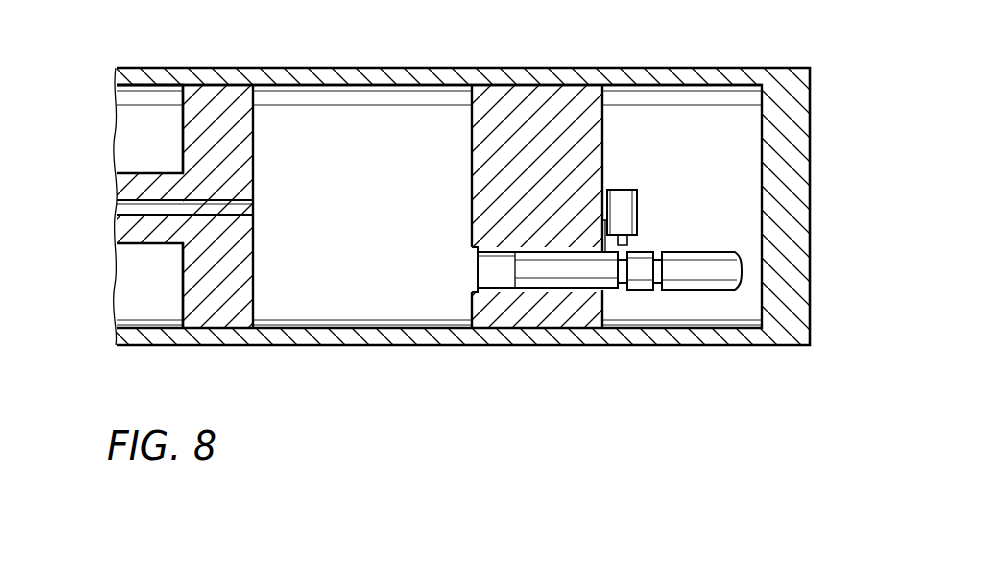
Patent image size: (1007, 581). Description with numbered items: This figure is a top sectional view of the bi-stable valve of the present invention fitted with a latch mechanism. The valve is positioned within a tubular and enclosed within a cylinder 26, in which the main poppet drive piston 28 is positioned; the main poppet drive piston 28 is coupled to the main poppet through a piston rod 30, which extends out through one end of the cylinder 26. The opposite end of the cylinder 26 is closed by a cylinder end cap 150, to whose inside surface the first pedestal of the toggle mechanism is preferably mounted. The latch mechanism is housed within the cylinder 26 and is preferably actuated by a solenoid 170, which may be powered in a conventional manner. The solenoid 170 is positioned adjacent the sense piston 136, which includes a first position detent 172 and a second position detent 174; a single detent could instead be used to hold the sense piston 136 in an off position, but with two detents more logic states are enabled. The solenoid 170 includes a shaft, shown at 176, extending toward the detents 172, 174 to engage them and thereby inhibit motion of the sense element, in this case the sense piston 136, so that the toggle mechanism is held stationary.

The cylinder 26 is at (385, 75).
The main poppet drive piston 28 is at (243, 147).
The piston rod 30 is at (145, 173).
The cylinder end cap 150 is at (793, 233).
The solenoid 170 is at (626, 190).
The first position detent 172 is at (630, 247).
The second position detent 174 is at (660, 252).
The stem 176 is at (622, 245).
The sense piston 136 is at (707, 287).